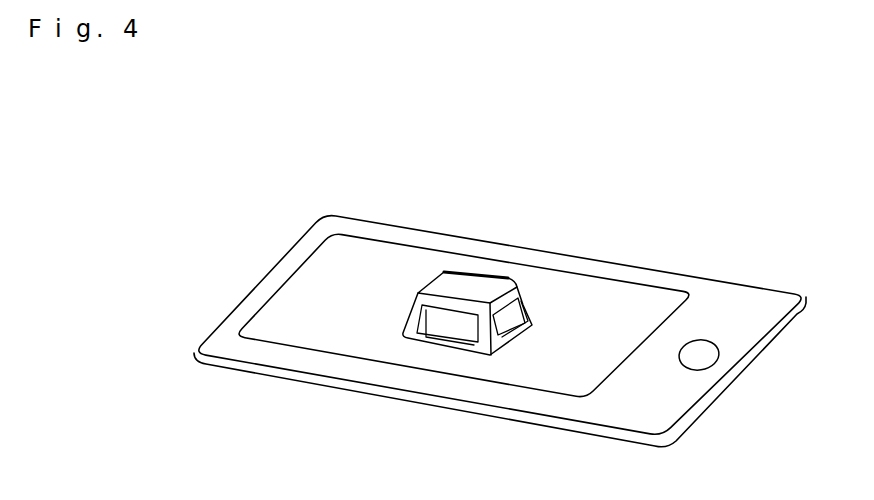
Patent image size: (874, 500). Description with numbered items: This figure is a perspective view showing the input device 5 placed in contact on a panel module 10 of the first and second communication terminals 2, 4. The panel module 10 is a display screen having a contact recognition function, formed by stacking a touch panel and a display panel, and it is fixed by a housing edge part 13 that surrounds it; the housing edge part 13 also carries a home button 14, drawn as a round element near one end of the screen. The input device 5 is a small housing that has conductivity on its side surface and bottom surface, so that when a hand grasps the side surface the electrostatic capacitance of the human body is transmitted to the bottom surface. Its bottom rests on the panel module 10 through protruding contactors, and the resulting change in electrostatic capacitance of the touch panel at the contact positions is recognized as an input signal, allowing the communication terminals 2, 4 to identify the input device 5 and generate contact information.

The first communication terminal 2 is at (520, 297).
The second communication terminal 4 is at (520, 297).
The input device 5 is at (478, 292).
The panel module 10 is at (653, 313).
The housing edge part 13 is at (630, 410).
The home button 14 is at (693, 353).